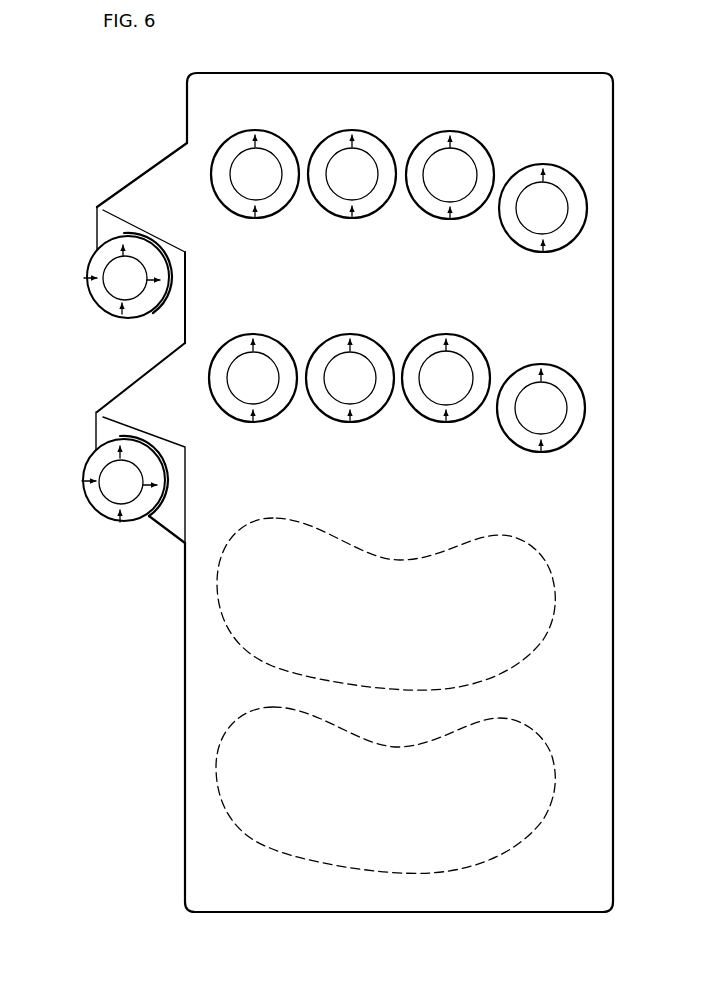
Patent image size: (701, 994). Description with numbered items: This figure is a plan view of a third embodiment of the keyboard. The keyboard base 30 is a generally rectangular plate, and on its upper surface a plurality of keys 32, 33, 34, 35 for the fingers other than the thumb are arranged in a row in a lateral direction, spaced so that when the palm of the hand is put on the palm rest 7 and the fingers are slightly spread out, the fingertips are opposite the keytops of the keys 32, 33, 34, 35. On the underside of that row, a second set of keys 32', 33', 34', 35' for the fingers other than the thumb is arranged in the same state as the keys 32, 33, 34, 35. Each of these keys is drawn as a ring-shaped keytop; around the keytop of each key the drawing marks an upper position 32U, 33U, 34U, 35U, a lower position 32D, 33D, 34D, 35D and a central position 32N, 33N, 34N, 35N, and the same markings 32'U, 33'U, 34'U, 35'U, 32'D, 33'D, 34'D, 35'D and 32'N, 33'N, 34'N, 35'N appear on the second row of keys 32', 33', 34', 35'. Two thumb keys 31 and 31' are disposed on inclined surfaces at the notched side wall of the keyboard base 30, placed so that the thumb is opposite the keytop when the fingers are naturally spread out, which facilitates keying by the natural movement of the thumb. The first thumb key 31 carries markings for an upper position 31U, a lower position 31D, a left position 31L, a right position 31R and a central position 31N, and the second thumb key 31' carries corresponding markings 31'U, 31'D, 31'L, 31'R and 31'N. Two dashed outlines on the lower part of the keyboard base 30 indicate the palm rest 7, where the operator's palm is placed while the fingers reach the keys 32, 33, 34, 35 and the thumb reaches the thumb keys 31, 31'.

The palm rest 7 is at (552, 747).
The keyboard base 30 is at (612, 778).
The thumb key 31 is at (103, 252).
The upper portion of roller 31 31U is at (128, 252).
The lower portion of roller 31 31D is at (112, 306).
The left portion of roller 31 31L is at (84, 278).
The right portion of roller 31 31R is at (146, 290).
The center of roller 31 31N is at (115, 283).
The thumb key 31' is at (91, 480).
The upper portion of roller 31' 31'U is at (72, 420).
The lower portion of roller 31' 31'D is at (96, 551).
The left portion of roller 31' 31'L is at (56, 454).
The right portion of roller 31' 31'R is at (145, 533).
The center of roller 31' 31'N is at (90, 508).
The key 32 is at (255, 115).
The upper portion of roller 32 32U is at (268, 140).
The lower portion of roller 32 32D is at (258, 208).
The center of roller 32 32N is at (244, 180).
The key 33 is at (358, 115).
The upper portion of roller 33 33U is at (366, 140).
The lower portion of roller 33 33D is at (356, 208).
The center of roller 33 33N is at (342, 180).
The key 34 is at (456, 116).
The upper portion of roller 34 34U is at (468, 141).
The lower portion of roller 34 34D is at (458, 209).
The center of roller 34 34N is at (440, 181).
The key 35 is at (543, 132).
The upper portion of roller 35 35U is at (561, 174).
The lower portion of roller 35 35D is at (550, 242).
The center of roller 35 35N is at (535, 215).
The key 32' is at (260, 420).
The upper portion of roller 32' 32'U is at (285, 326).
The lower portion of roller 32' 32'D is at (254, 448).
The center of roller 32' 32'N is at (236, 405).
The key 33' is at (356, 420).
The upper portion of roller 33' 33'U is at (384, 326).
The lower portion of roller 33' 33'D is at (355, 448).
The center of roller 33' 33'N is at (335, 405).
The key 34' is at (453, 416).
The upper portion of roller 34' 34'U is at (482, 332).
The lower portion of roller 34' 34'D is at (449, 445).
The center of roller 34' 34'N is at (435, 405).
The key 35' is at (552, 452).
The upper portion of roller 35' 35'U is at (564, 355).
The lower portion of roller 35' 35'D is at (562, 480).
The center of roller 35' 35'N is at (539, 439).